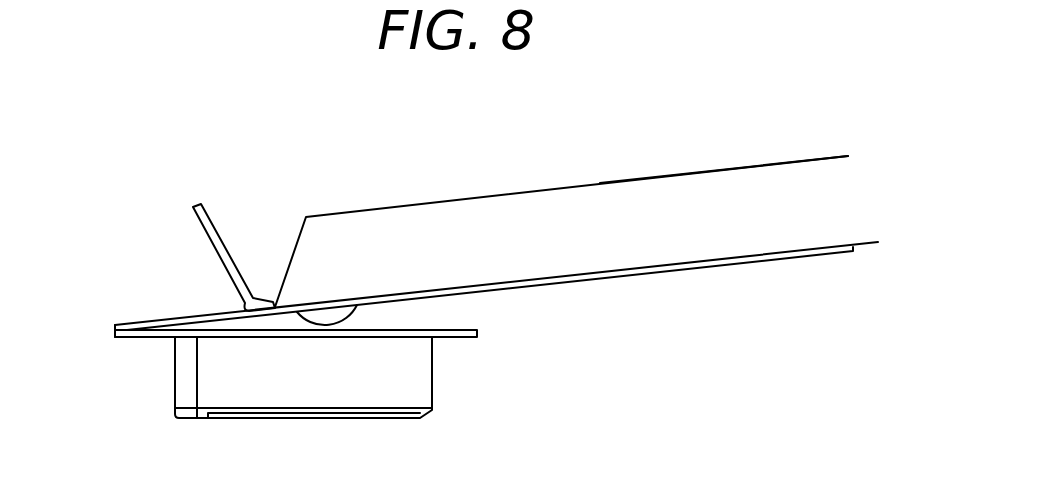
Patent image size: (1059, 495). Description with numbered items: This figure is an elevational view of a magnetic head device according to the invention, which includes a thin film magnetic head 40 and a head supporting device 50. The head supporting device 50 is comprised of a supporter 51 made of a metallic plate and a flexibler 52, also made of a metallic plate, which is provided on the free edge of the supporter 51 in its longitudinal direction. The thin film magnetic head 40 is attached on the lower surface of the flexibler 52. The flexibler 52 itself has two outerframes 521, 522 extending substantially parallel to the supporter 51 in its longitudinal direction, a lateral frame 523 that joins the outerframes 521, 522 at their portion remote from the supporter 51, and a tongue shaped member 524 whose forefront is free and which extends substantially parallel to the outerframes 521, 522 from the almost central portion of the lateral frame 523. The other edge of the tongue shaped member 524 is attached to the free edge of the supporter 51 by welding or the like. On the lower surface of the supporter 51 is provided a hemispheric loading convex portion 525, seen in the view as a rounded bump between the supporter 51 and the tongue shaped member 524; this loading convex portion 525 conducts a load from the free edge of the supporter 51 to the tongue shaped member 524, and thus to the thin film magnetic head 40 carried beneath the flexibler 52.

The thin film magnetic head 40 is at (203, 431).
The head supporting device 50 is at (461, 196).
The supporter 51 is at (632, 197).
The flexibler 52 is at (468, 278).
The outerframe 521 is at (469, 285).
The outerframe 522 is at (180, 318).
The lateral frame 523 is at (135, 323).
The tongue shaped member 524 is at (452, 330).
The loading convex portion 525 is at (327, 320).